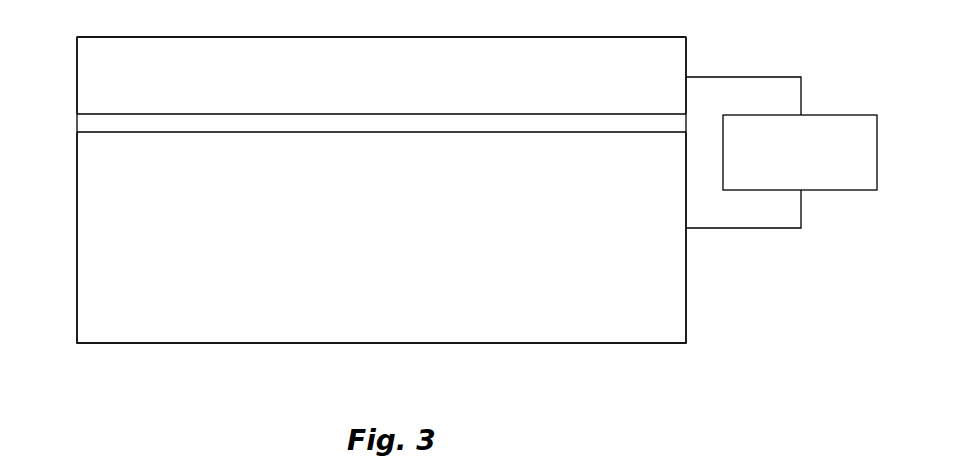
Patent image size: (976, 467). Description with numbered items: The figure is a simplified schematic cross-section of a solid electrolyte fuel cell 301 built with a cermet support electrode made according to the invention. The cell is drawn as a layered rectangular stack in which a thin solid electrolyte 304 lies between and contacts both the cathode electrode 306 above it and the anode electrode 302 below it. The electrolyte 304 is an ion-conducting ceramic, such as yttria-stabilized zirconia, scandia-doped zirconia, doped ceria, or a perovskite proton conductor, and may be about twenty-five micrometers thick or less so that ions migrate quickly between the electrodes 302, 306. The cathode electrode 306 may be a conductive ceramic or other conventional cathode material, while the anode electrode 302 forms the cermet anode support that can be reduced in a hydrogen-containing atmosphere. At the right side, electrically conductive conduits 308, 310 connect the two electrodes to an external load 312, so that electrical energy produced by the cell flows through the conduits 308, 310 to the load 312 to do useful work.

The solid electrolyte fuel cell 301 is at (135, 30).
The anode electrode 302 is at (77, 237).
The solid electrolyte 304 is at (77, 122).
The cathode electrode 306 is at (77, 77).
The electrically conductive conduit 308 is at (733, 230).
The electrically conductive conduit 310 is at (733, 76).
The load 312 is at (838, 114).